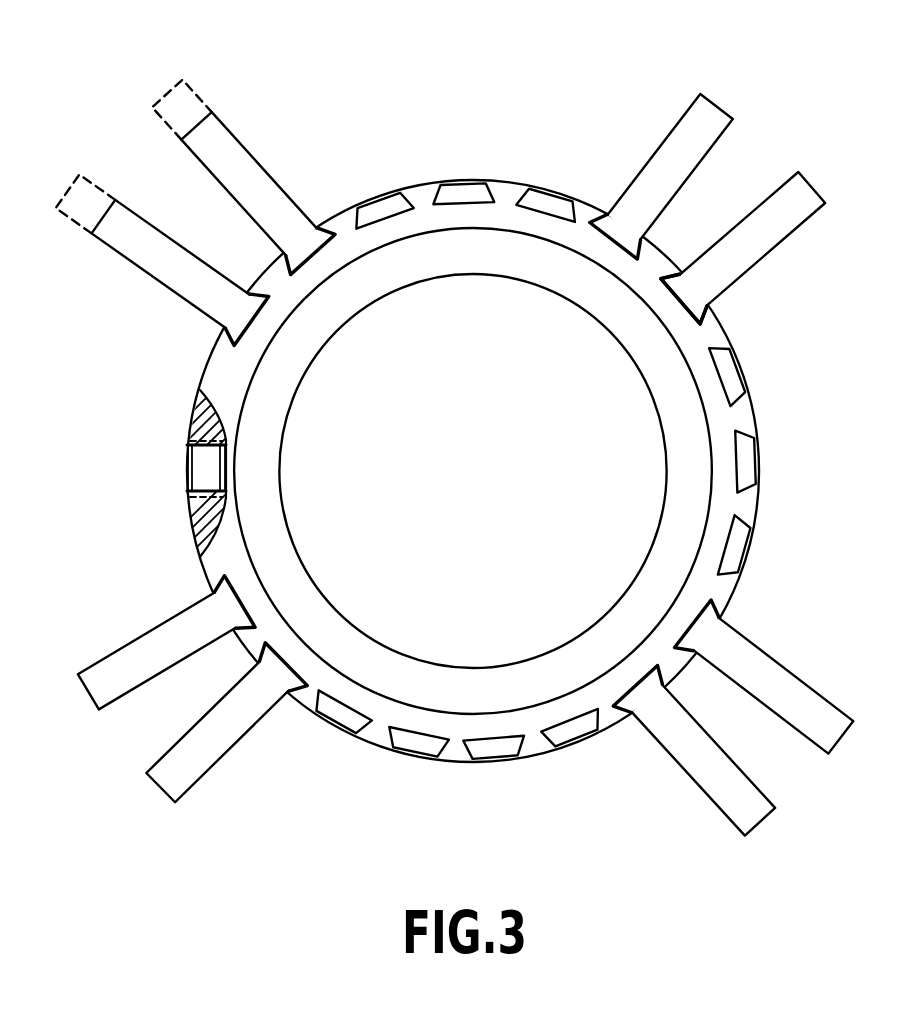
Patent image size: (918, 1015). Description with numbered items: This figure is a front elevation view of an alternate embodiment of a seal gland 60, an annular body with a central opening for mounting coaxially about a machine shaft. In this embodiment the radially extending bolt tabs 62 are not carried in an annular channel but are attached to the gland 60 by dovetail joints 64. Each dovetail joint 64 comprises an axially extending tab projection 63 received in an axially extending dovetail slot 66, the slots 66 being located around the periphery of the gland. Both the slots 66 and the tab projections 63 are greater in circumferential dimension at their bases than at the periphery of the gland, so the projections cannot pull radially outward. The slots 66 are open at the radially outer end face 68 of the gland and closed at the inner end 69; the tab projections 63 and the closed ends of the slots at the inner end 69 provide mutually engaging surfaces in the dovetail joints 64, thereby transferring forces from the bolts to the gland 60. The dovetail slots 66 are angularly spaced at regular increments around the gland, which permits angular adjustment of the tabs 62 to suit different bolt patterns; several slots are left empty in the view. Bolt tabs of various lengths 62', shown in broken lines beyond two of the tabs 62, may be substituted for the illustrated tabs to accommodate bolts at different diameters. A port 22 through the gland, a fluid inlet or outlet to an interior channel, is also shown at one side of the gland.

The seal gland 60 is at (554, 102).
The bolt tabs 62 is at (466, 455).
The bolt tabs of various lengths 62' is at (134, 147).
The tab projections 63 is at (688, 297).
The dovetail joints 64 is at (707, 308).
The dovetail slots 66 is at (735, 535).
The radially outer end face 68 is at (463, 723).
The inner end 69 is at (492, 750).
The port 22 is at (187, 467).